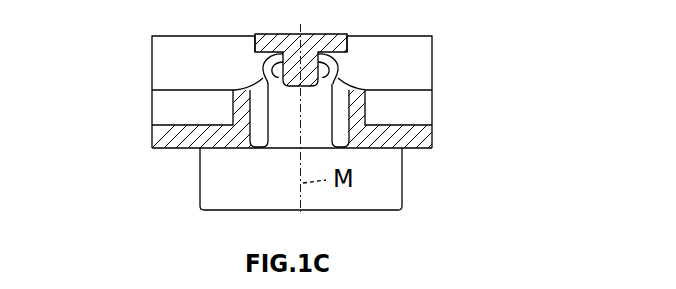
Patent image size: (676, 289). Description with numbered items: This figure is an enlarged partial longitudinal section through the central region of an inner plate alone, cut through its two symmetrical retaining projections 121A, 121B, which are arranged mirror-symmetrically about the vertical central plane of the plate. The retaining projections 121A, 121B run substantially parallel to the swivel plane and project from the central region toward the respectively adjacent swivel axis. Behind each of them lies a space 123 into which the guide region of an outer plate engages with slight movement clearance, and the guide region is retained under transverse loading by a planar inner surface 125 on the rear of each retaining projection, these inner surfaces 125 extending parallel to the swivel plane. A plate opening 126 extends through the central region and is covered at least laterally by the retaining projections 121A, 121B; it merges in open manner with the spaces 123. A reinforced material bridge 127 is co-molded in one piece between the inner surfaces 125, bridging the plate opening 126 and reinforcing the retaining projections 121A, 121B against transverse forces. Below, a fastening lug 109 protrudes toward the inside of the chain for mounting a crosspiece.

The fastening lug 109 is at (385, 180).
The retaining projection 121A is at (340, 40).
The retaining projection 121B is at (258, 40).
The space 123 is at (222, 77).
The inner surface 125 is at (264, 70).
The plate opening 126 is at (313, 125).
The material bridge 127 is at (257, 80).